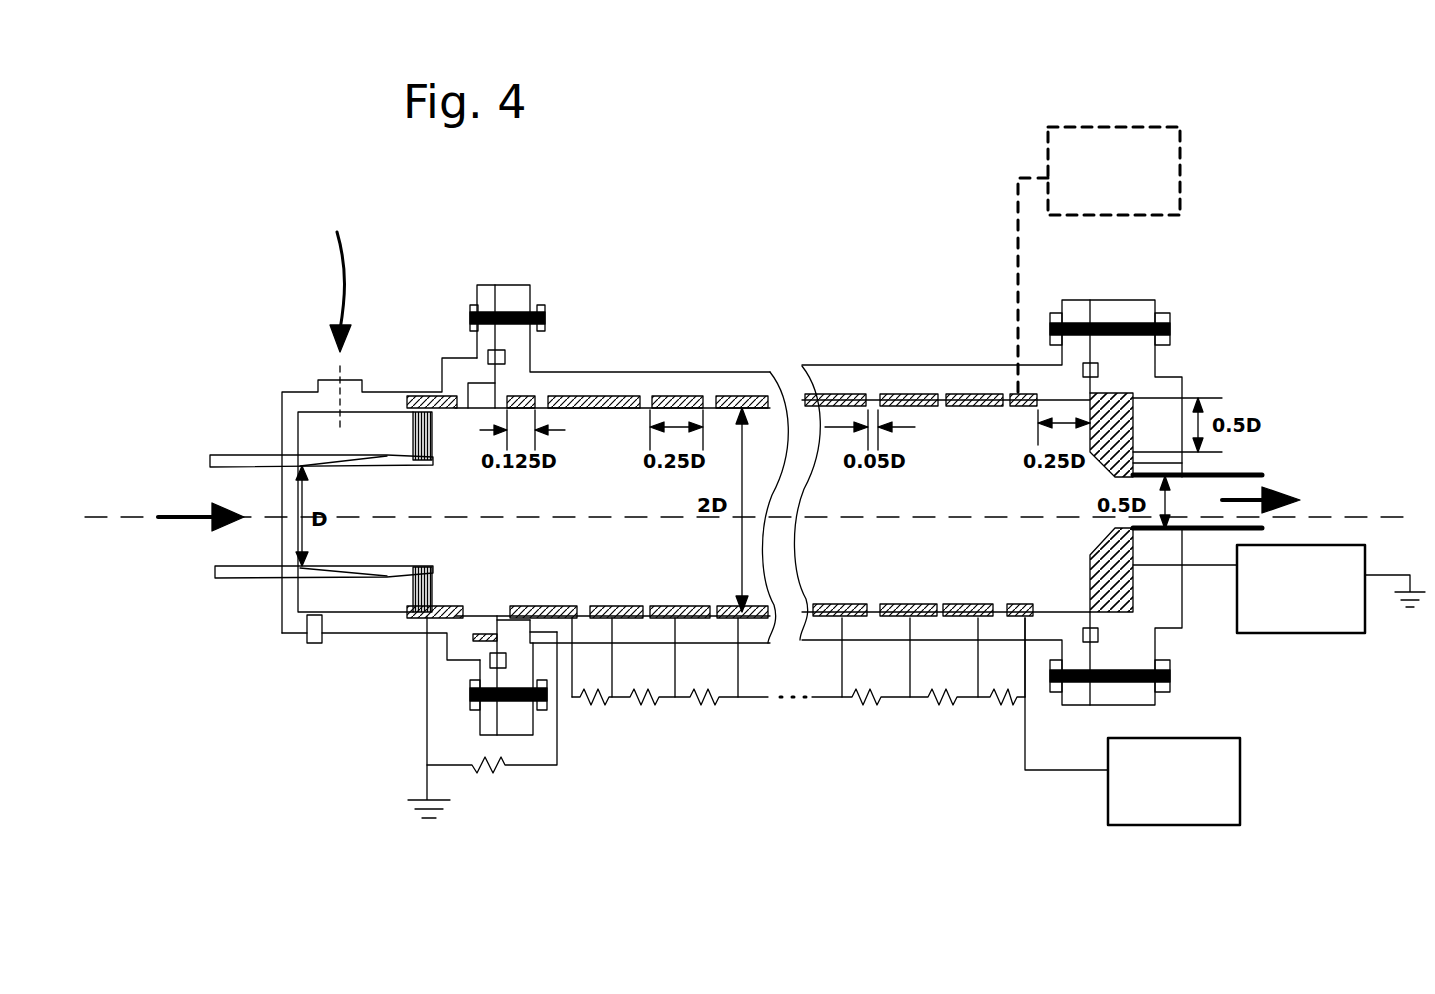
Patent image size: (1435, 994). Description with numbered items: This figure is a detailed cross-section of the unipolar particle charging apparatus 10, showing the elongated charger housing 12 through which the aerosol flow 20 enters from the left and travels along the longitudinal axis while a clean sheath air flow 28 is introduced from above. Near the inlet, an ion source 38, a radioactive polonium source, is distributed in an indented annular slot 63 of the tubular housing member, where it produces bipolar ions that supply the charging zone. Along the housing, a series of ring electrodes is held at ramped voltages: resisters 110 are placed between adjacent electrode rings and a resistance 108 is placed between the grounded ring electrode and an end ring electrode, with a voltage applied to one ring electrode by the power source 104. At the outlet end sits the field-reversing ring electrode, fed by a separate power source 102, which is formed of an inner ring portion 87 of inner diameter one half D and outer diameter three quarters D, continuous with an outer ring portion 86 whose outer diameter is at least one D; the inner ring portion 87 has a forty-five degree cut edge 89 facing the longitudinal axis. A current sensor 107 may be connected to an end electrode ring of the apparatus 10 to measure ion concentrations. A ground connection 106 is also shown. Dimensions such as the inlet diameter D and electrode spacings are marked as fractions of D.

The unipolar particle charging apparatus 10 is at (633, 282).
The charger housing 12 is at (846, 368).
The aerosol flow 20 is at (180, 522).
The sheath air flow 28 is at (342, 277).
The ion source 38 is at (472, 641).
The indented annular slot 63 is at (467, 630).
The outer ring portion 86 is at (1030, 530).
The inner ring portion 87 is at (1135, 466).
The 45 degree cut edge 89 is at (1030, 530).
The power source 102 is at (1315, 633).
The power source 104 is at (1240, 797).
The ground connection 106 is at (427, 782).
The current sensor 107 is at (1182, 186).
The resistance 108 is at (497, 778).
The resisters 110 is at (705, 762).